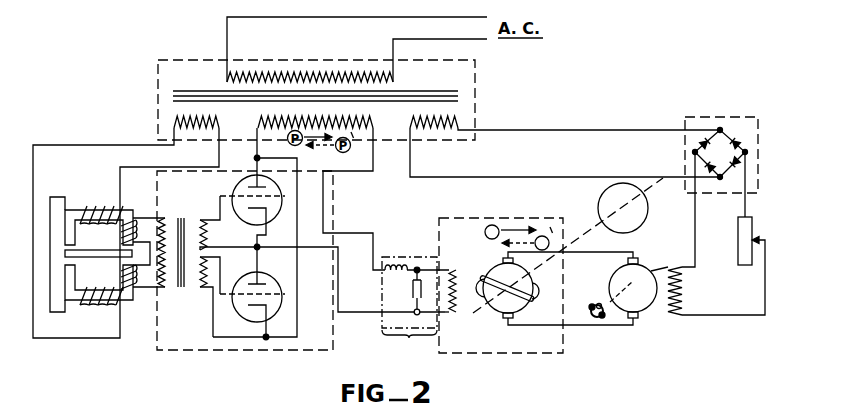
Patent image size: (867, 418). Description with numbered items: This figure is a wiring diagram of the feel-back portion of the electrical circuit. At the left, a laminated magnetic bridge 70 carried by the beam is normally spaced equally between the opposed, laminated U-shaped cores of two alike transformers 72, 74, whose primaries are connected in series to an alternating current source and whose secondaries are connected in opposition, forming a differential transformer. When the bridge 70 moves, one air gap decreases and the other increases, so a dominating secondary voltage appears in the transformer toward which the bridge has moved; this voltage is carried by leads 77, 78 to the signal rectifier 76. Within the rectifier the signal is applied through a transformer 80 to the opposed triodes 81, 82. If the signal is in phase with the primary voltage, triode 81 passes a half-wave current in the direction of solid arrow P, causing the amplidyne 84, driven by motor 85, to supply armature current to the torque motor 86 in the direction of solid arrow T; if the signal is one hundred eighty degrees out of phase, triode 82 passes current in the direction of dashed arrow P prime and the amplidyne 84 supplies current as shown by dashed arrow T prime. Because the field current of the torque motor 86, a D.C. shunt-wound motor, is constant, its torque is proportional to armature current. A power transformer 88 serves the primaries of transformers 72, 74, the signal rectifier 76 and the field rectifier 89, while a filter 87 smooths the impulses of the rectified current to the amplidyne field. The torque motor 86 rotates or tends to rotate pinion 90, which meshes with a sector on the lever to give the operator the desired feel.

The laminated magnetic bridge 70 is at (107, 251).
The transformer 72 is at (105, 209).
The transformer 74 is at (97, 300).
The signal rectifier 76 is at (199, 352).
The lead 77 is at (144, 216).
The lead 78 is at (146, 292).
The transformer 80 is at (185, 217).
The triode 81 is at (236, 187).
The triode 82 is at (245, 318).
The amplidyne 84 is at (492, 353).
The motor 85 is at (643, 228).
The torque motor 86 is at (645, 286).
The filter 87 is at (419, 308).
The power transformer 88 is at (476, 86).
The field rectifier 89 is at (718, 117).
The pinion 90 is at (592, 320).